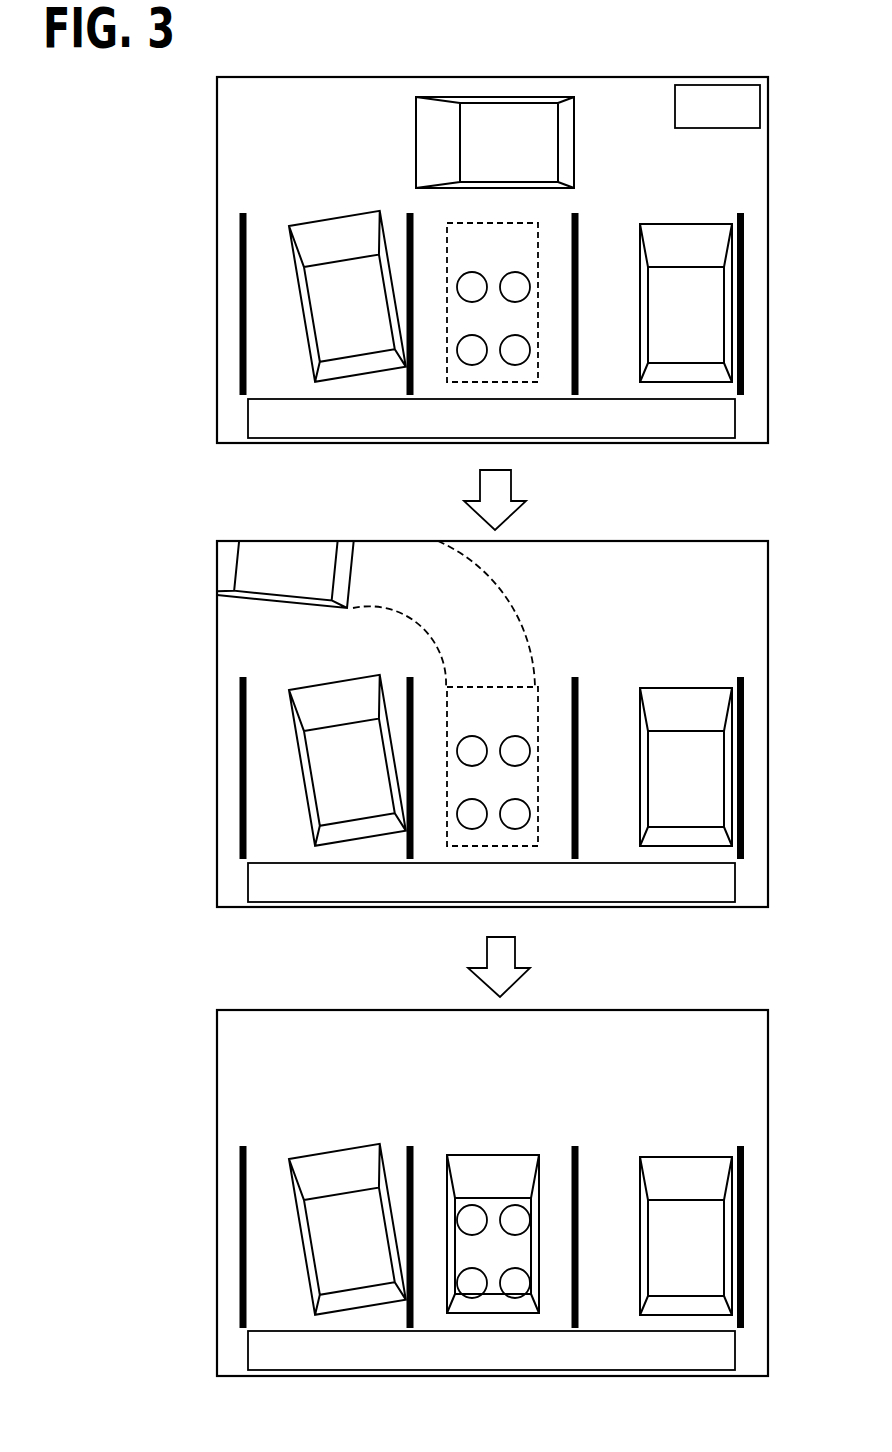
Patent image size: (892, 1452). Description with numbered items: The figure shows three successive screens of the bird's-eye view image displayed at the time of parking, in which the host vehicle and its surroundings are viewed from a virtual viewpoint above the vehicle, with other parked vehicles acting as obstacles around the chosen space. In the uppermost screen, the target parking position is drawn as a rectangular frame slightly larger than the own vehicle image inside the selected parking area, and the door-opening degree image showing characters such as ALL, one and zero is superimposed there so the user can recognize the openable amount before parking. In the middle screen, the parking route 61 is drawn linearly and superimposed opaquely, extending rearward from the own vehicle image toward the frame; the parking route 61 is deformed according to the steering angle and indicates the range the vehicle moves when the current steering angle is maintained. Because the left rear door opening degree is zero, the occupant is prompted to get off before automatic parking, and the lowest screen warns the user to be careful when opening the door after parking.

The parking route 61 is at (523, 625).